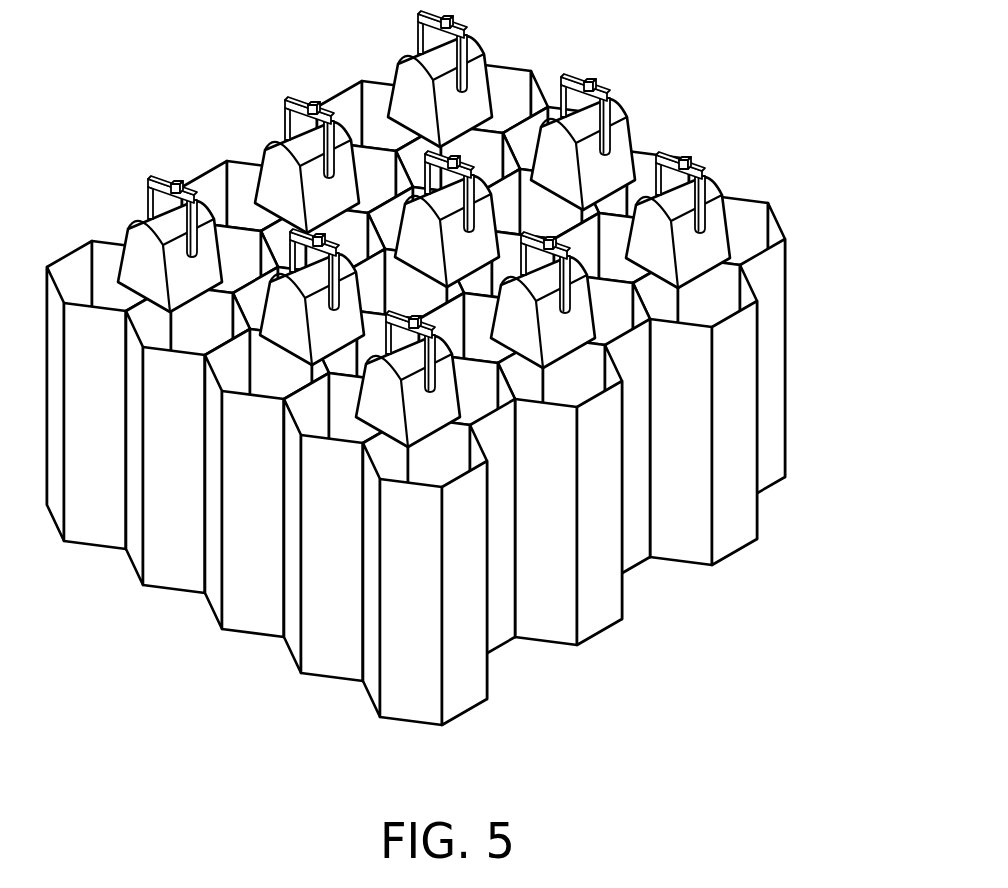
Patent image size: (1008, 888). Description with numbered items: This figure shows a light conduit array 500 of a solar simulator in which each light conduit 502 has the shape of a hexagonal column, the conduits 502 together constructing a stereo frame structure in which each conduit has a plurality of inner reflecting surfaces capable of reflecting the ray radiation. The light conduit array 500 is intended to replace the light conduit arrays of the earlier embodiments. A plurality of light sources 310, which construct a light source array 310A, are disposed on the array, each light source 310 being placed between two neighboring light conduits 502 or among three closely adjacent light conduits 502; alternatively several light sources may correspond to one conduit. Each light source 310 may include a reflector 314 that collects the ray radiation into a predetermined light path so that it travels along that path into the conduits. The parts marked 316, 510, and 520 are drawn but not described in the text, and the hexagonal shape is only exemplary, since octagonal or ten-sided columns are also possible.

The light conduit array 500 is at (457, 394).
The light conduit 502 is at (778, 242).
The outer wall 510 is at (790, 372).
The partition wall 520 is at (757, 256).
The light source 310 is at (678, 232).
The light source array 310A is at (744, 196).
The reflector 314 is at (680, 192).
The bump 316 is at (703, 187).